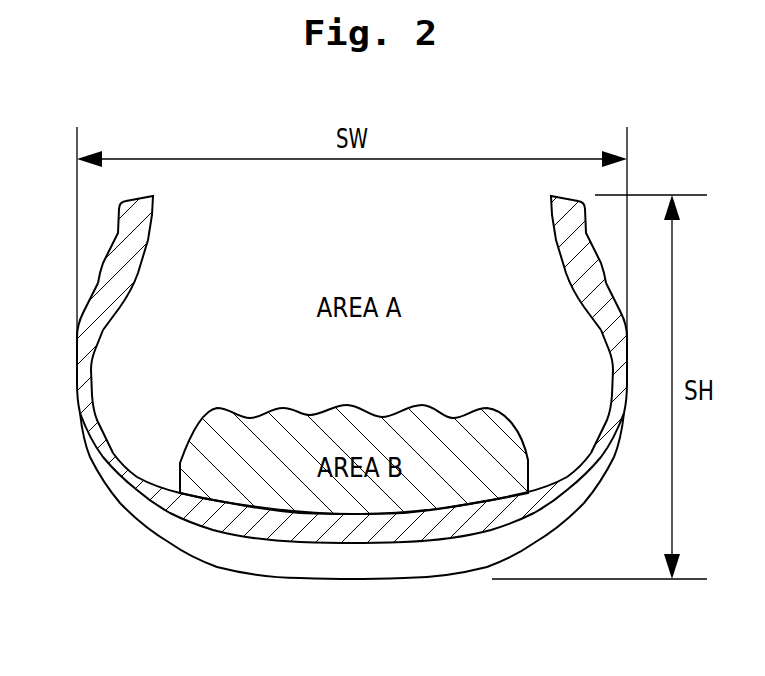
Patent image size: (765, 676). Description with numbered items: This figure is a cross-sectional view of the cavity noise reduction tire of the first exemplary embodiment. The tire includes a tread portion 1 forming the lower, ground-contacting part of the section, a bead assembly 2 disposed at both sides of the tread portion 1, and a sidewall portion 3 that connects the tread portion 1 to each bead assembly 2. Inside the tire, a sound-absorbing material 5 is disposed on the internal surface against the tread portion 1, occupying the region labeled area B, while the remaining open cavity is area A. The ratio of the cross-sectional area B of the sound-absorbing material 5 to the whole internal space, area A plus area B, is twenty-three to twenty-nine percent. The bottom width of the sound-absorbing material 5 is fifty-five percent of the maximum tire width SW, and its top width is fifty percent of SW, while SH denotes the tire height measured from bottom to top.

The tread portion 1 is at (358, 533).
The bead assembly 2 is at (130, 230).
The sidewall portion 3 is at (92, 332).
The sound-absorbing material 5 is at (227, 425).